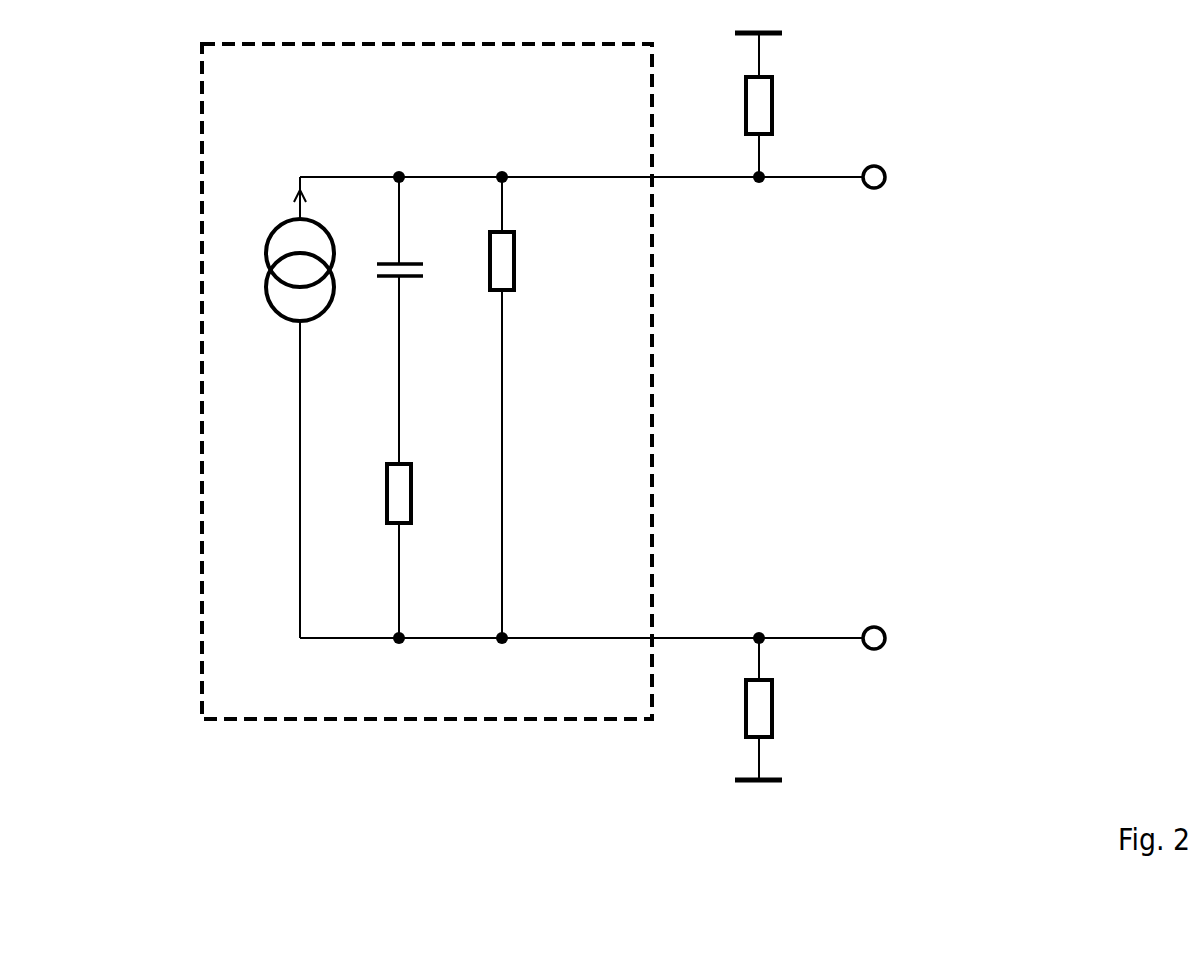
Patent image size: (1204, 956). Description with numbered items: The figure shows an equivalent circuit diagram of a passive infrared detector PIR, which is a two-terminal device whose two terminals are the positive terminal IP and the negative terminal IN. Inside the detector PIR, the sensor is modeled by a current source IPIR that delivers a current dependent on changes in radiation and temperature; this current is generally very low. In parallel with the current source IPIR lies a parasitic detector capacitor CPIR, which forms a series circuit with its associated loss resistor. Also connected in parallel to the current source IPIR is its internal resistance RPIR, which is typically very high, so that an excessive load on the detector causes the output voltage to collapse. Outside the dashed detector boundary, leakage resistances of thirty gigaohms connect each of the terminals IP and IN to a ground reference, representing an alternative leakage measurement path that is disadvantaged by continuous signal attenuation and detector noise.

The passive infrared detector PIR is at (427, 381).
The current source IPIR is at (282, 251).
The parasitic detector capacitor CPIR is at (428, 292).
The internal resistance of the current source RPIR is at (536, 280).
The positive detector terminal IP is at (890, 177).
The negative detector terminal IN is at (892, 638).